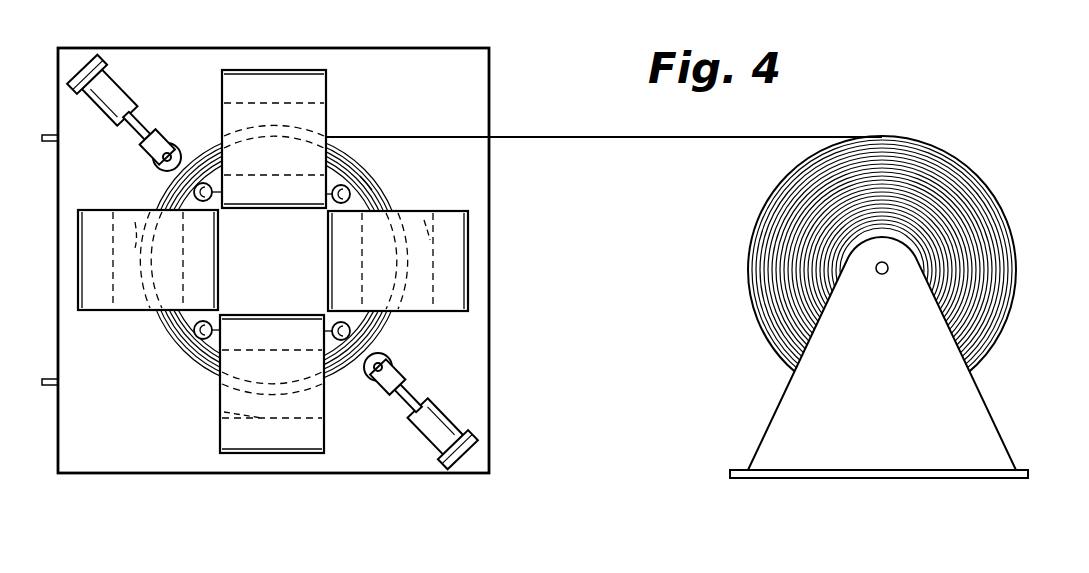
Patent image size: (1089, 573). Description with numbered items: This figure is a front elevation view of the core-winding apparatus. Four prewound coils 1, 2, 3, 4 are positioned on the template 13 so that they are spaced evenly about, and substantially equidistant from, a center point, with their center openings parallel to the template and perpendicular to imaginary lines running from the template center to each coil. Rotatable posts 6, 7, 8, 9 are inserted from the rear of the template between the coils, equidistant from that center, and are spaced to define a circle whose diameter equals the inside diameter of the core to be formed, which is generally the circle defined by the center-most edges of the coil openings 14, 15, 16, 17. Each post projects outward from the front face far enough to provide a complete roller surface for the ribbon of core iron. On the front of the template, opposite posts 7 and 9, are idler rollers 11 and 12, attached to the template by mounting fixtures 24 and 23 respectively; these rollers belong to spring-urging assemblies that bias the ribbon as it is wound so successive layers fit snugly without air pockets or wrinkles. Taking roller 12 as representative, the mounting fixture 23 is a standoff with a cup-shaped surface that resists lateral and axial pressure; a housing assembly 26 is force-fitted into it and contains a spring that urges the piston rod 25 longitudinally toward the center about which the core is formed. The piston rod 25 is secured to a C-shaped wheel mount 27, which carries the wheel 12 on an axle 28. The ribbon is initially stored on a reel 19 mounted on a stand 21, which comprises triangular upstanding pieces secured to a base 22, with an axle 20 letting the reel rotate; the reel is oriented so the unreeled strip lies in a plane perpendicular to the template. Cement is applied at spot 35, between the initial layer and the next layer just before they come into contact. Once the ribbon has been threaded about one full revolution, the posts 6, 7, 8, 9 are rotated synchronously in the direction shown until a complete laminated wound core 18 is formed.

The prewound coil 1 is at (470, 232).
The prewound coil 2 is at (78, 240).
The prewound coil 3 is at (310, 85).
The prewound coil 4 is at (235, 441).
The rotatable post 6 is at (336, 204).
The rotatable post 7 is at (210, 198).
The rotatable post 8 is at (212, 330).
The rotatable post 9 is at (332, 331).
The idler roller 11 is at (177, 148).
The idler roller 12 is at (390, 354).
The template 13 is at (456, 89).
The coil opening 14 is at (424, 220).
The coil opening 15 is at (330, 121).
The coil opening 16 is at (135, 222).
The coil opening 17 is at (224, 412).
The laminated wound core 18 is at (368, 185).
The reel 19 is at (963, 184).
The axle 20 is at (882, 275).
The stand 21 is at (898, 399).
The base 22 is at (732, 479).
The mounting fixture 23 is at (453, 397).
The mounting fixture 24 is at (135, 96).
The piston rod 25 is at (412, 404).
The housing assembly 26 is at (440, 412).
The C-shaped wheel mount 27 is at (406, 373).
The axle 28 is at (384, 367).
The cement spot 35 is at (358, 150).